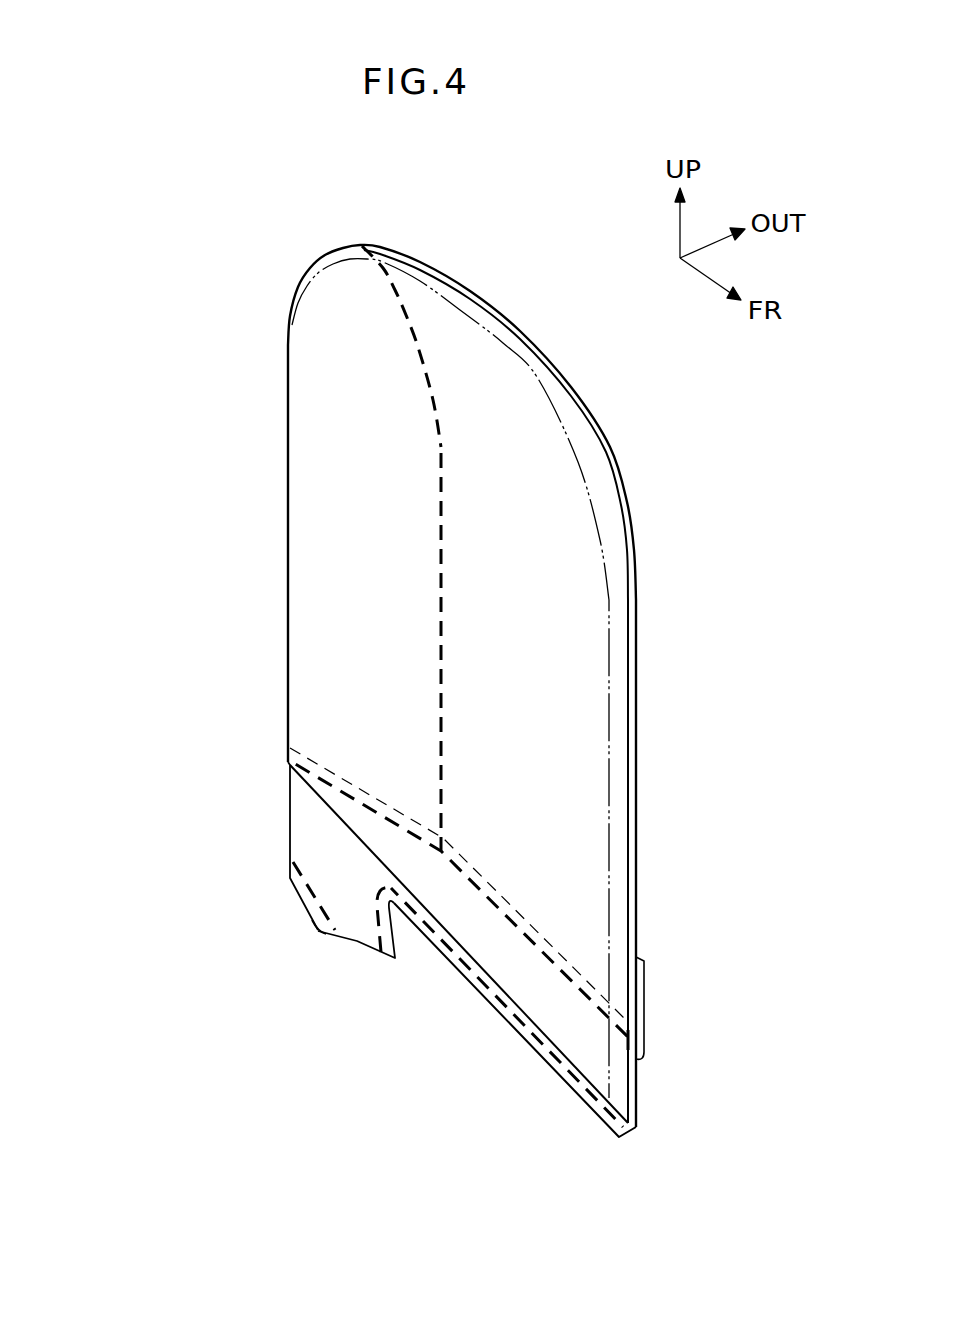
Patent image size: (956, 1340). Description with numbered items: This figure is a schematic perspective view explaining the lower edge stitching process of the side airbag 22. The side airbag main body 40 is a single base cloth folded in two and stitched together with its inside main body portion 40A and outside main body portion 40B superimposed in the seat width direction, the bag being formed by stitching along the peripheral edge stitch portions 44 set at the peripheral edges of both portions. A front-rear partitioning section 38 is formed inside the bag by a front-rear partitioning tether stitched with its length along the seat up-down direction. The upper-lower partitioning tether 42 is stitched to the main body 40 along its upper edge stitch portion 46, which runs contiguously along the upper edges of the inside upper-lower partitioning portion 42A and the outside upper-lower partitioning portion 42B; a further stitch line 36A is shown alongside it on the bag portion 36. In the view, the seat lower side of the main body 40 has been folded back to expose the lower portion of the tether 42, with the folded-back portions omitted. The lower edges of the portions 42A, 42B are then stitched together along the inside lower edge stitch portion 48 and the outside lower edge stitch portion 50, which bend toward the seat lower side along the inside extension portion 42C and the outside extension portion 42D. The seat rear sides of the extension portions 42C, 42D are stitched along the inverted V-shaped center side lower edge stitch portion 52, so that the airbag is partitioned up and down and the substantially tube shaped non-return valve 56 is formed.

The side airbag 22 is at (97, 803).
The side airbag main body 40 is at (287, 706).
The inside main body portion 40A is at (447, 347).
The outside main body portion 40B is at (547, 365).
The peripheral edge stitch portions 44 is at (582, 472).
The front-rear partitioning section 38 is at (443, 540).
The upper-lower partitioning tether 42 is at (366, 955).
The bag portion 36 is at (288, 817).
The seam line 36A is at (357, 787).
The upper edge stitch portion 46 is at (527, 937).
The center side lower edge stitch portion 52 is at (303, 897).
The non-return valve 56 is at (318, 937).
The inside extension portion 42C is at (325, 999).
The outside extension portion 42D is at (360, 943).
The inside lower edge stitch portion 48 is at (491, 1021).
The outside lower edge stitch portion 50 is at (470, 958).
The inside upper-lower partitioning portion 42A is at (515, 1056).
The outside upper-lower partitioning portion 42B is at (553, 1010).